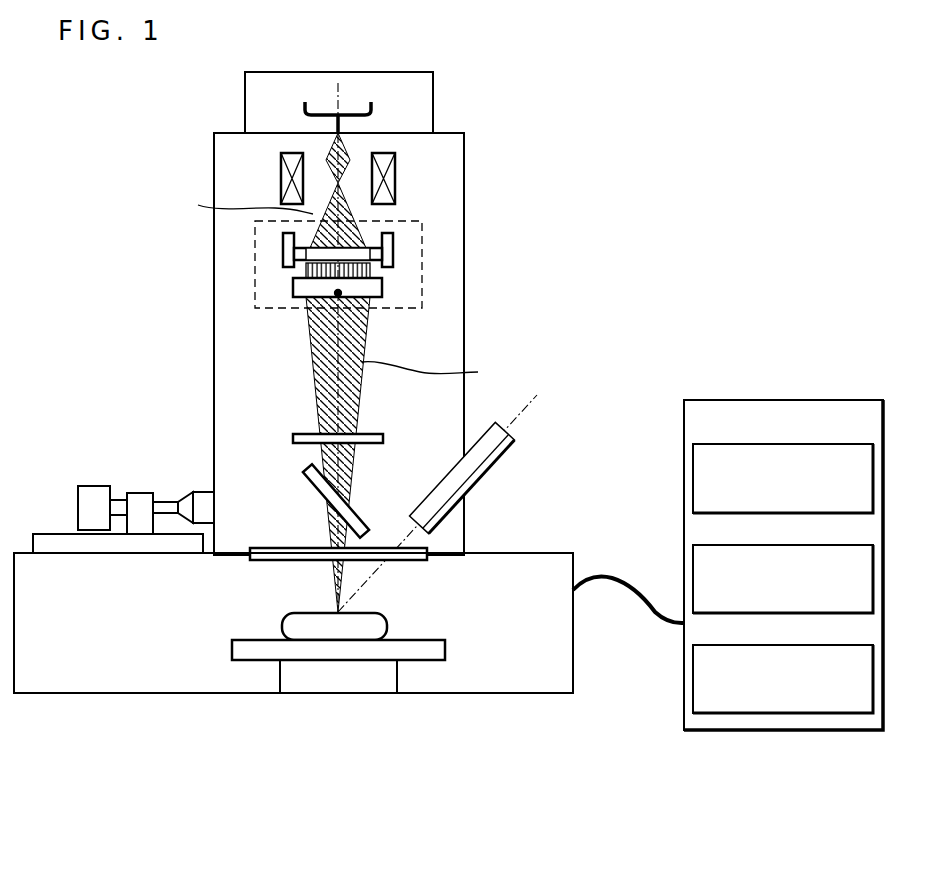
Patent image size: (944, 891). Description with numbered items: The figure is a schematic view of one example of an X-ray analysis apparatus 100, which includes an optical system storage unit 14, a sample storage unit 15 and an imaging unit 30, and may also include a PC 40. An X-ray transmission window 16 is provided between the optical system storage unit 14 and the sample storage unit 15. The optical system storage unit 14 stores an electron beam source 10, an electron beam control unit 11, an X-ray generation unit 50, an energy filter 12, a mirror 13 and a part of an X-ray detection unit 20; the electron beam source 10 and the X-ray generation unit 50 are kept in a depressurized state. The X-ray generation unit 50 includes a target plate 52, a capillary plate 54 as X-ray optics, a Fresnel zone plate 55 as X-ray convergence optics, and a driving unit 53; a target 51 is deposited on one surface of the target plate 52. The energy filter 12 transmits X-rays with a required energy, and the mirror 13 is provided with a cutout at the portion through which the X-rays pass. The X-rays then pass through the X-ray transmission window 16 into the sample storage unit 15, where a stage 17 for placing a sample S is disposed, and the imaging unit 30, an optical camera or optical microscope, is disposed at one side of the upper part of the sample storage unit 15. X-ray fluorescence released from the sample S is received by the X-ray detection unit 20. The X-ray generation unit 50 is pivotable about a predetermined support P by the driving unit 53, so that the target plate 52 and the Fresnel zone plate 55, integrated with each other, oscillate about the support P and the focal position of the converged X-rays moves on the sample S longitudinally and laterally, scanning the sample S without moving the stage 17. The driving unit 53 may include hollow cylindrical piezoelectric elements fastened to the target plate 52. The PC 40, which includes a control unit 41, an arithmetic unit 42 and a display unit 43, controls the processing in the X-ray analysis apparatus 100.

The X-ray analysis apparatus 100 is at (738, 154).
The electron beam source 10 is at (305, 102).
The electron beam control unit 11 is at (281, 170).
The energy filter 12 is at (295, 430).
The mirror 13 is at (305, 468).
The optical system storage unit 14 is at (213, 350).
The sample storage unit 15 is at (532, 553).
The X-ray transmission window 16 is at (272, 550).
The stage 17 is at (257, 653).
The X-ray detection unit 20 is at (505, 457).
The imaging unit 30 is at (93, 495).
The PC 40 is at (783, 547).
The control unit 41 is at (782, 443).
The arithmetic unit 42 is at (782, 544).
The display unit 43 is at (782, 644).
The X-ray generation unit 50 is at (342, 253).
The target 51 is at (363, 240).
The target plate 52 is at (373, 247).
The driving unit 53 is at (287, 252).
The capillary plate 54 is at (372, 272).
The Fresnel zone plate 55 is at (293, 292).
The support P is at (385, 293).
The sample S is at (372, 611).